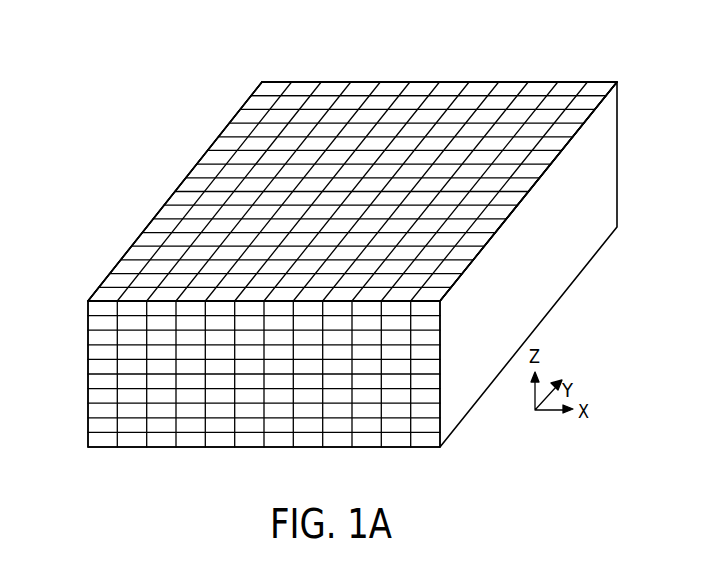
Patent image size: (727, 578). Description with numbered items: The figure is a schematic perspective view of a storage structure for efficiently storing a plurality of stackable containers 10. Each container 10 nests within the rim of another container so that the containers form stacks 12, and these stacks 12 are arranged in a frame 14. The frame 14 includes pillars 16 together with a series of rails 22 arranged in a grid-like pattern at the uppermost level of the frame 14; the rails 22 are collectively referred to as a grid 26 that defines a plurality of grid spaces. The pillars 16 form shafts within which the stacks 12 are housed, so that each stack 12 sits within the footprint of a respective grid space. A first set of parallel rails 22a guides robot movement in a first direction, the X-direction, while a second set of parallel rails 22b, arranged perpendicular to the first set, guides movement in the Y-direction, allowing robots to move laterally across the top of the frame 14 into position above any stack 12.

The stackable container 10 is at (97, 383).
The stack 12 is at (162, 447).
The frame 14 is at (178, 189).
The pillar 16 is at (263, 432).
The rail 22 is at (227, 150).
The first set of parallel rails 22a is at (142, 238).
The second set of parallel rails 22b is at (490, 90).
The grid 26 is at (276, 92).